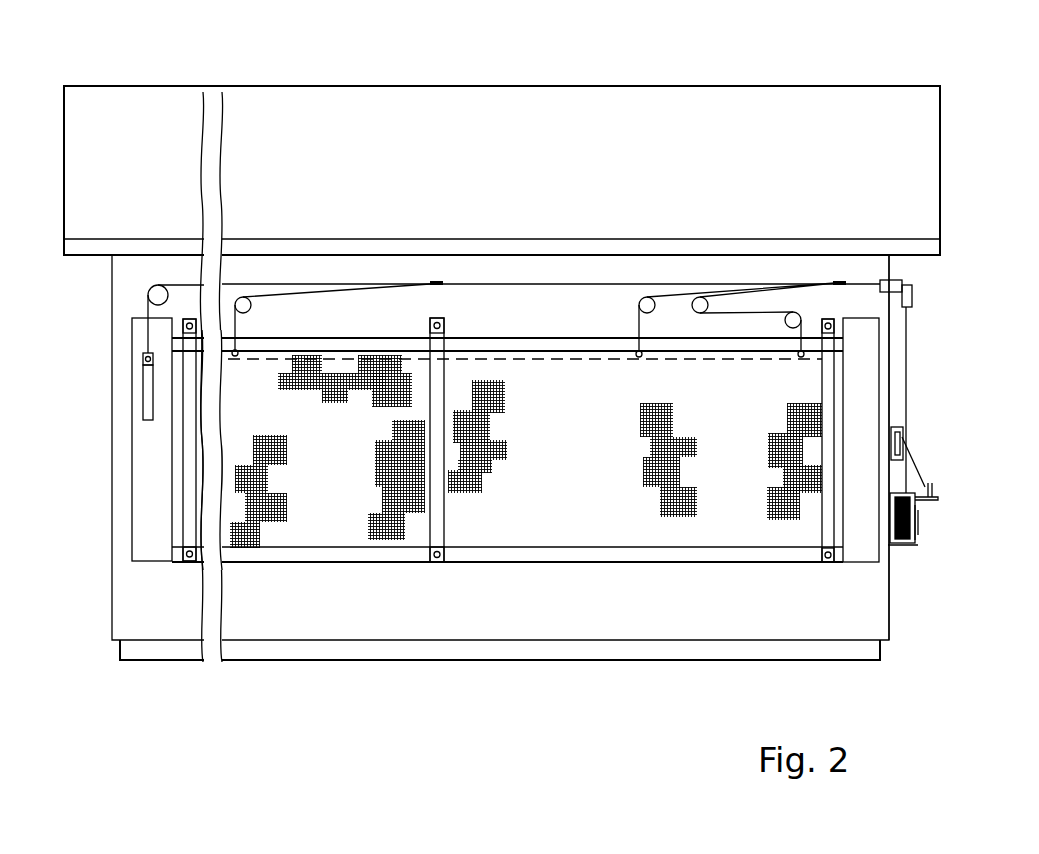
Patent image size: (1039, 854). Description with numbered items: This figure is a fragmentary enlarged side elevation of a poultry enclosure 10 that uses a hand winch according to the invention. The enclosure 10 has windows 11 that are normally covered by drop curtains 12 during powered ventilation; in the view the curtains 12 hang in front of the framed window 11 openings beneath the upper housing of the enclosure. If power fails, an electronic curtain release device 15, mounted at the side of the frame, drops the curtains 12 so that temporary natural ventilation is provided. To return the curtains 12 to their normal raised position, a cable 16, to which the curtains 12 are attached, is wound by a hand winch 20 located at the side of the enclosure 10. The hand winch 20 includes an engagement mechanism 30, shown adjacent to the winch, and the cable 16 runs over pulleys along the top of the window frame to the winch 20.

The poultry enclosure 10 is at (510, 70).
The windows 11 is at (288, 553).
The drop curtains 12 is at (348, 428).
The electronic curtain release device 15 is at (903, 433).
The cable 16 is at (907, 372).
The hand winch 20 is at (906, 566).
The engagement mechanism 30 is at (940, 526).